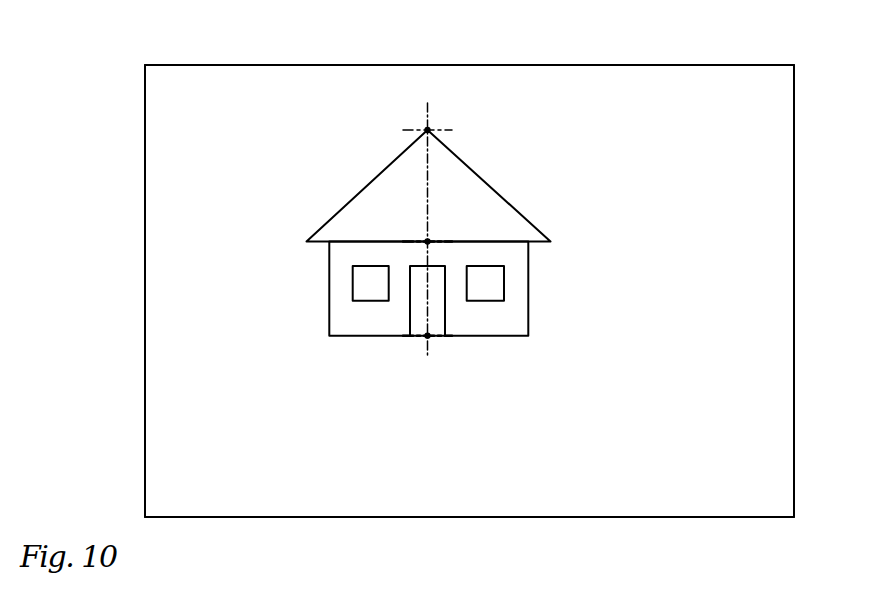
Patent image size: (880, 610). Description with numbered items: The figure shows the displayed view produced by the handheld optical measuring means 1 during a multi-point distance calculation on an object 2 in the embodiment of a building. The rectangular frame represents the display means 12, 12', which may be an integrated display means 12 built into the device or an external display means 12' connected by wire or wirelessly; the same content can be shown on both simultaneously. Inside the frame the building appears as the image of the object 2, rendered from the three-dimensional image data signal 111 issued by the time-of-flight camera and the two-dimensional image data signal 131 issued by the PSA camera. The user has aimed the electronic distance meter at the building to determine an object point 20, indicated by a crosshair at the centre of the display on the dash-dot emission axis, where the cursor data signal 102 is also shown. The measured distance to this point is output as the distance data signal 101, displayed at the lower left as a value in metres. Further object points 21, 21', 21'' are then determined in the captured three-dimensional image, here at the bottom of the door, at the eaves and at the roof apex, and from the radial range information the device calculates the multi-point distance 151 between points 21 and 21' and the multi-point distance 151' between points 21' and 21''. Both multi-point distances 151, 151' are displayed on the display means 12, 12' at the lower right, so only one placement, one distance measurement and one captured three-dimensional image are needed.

The handheld optical measuring means 1 is at (778, 252).
The object 2 is at (498, 233).
The integrated display means 12 is at (469, 261).
The external display means 12' is at (469, 261).
The object point 20 is at (308, 209).
The further object point 21 is at (387, 353).
The further object point 21' is at (308, 209).
The further object point 21'' is at (377, 114).
The distance data signal 101 is at (258, 456).
The cursor data signal 102 is at (427, 242).
The 3D image data signal 111 is at (498, 233).
The 2D image data signal 131 is at (473, 196).
The multi-point distance 151 is at (627, 457).
The multi-point distance 151' is at (608, 489).